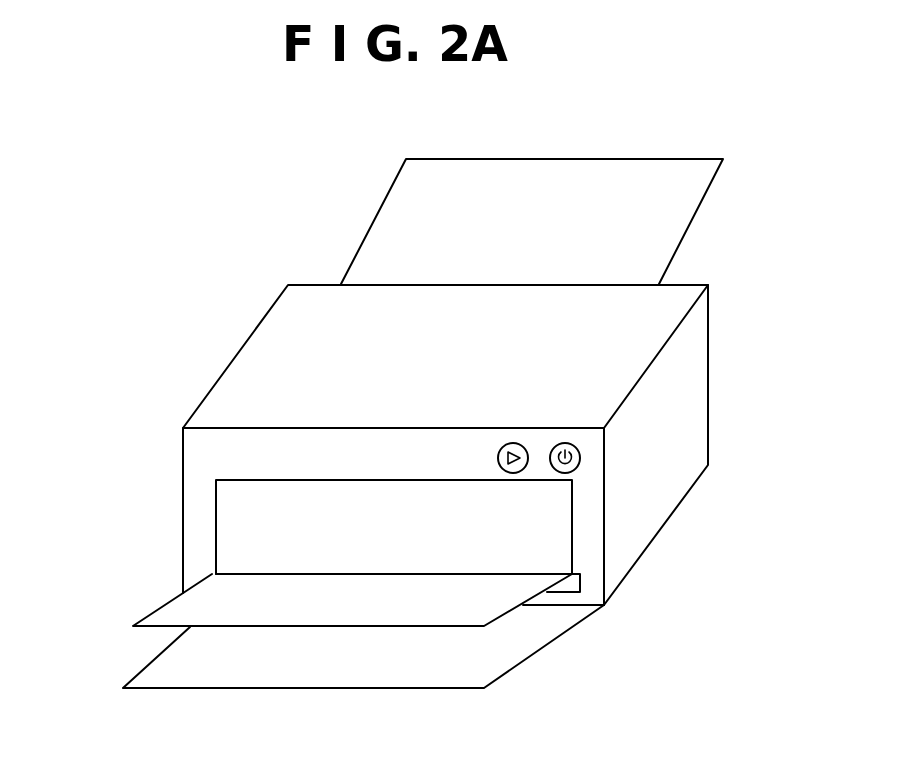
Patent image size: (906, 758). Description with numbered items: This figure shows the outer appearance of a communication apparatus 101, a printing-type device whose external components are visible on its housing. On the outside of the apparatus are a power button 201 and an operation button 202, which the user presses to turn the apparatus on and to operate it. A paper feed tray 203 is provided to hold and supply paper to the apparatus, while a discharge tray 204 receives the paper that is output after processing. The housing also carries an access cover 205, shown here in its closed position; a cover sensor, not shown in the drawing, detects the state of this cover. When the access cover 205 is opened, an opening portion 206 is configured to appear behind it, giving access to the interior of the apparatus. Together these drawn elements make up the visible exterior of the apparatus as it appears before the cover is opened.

The printing apparatus 101 is at (140, 219).
The power button 201 is at (580, 453).
The operation button 202 is at (524, 445).
The paper feed tray 203 is at (713, 182).
The discharge tray 204 is at (502, 677).
The access cover 205 is at (500, 617).
The opening portion 206 is at (558, 548).